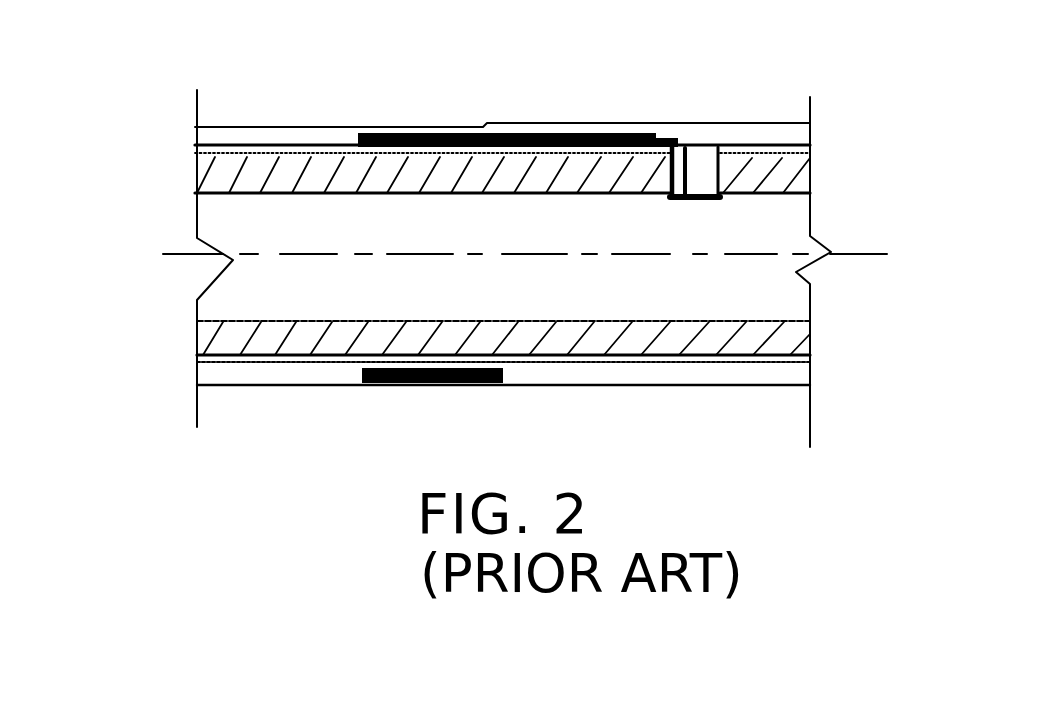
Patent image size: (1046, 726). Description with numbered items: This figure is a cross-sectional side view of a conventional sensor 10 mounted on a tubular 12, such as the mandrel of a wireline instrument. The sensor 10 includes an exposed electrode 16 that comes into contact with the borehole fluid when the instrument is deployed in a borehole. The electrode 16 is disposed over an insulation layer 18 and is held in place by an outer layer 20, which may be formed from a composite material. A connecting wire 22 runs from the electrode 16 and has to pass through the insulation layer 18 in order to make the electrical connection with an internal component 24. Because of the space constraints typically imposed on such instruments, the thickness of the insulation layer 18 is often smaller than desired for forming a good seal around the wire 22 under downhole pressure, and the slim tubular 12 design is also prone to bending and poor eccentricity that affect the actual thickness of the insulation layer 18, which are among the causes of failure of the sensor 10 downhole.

The sensor 10 is at (603, 61).
The tubular 12 is at (810, 330).
The electrode 16 is at (422, 133).
The insulation layer 18 is at (195, 152).
The outer layer 20 is at (305, 128).
The connecting wire 22 is at (652, 143).
The internal component 24 is at (642, 195).